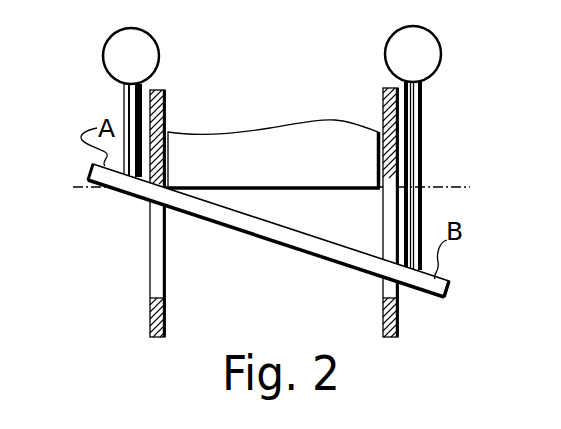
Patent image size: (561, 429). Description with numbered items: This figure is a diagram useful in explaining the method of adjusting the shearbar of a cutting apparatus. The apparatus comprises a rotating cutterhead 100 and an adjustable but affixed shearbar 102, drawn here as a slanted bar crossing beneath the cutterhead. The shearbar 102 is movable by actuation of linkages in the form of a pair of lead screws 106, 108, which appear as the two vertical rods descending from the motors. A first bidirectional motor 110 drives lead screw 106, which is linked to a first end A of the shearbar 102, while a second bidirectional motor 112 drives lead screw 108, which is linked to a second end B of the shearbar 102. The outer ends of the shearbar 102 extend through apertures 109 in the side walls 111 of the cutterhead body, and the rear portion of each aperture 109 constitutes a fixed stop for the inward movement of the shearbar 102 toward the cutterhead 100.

The rotating cutterhead 100 is at (262, 128).
The shearbar 102 is at (277, 243).
The lead screw 106 is at (128, 100).
The lead screw 108 is at (424, 140).
The aperture 109 is at (150, 247).
The first bidirectional motor 110 is at (157, 50).
The side wall 111 is at (150, 318).
The second bidirectional motor 112 is at (386, 54).